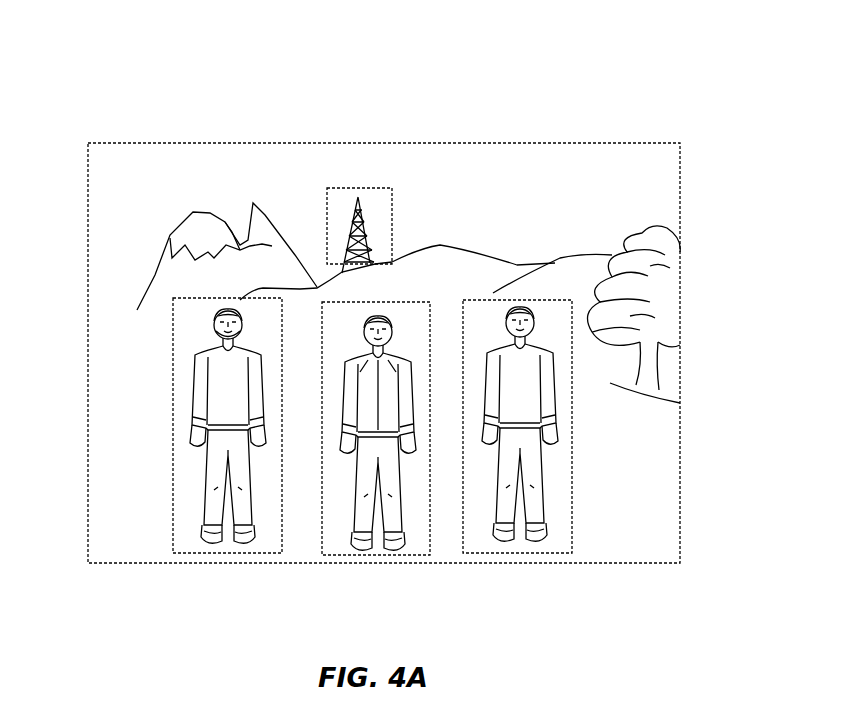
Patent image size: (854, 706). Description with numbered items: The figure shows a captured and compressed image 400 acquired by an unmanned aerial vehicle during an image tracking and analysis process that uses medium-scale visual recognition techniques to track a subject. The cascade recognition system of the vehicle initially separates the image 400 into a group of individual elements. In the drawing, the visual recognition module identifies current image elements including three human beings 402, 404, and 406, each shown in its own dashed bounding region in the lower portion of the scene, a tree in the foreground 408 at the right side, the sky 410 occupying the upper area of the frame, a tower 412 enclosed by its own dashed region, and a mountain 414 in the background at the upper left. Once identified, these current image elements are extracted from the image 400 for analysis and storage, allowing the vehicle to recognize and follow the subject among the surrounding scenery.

The captured and compressed image 400 is at (67, 104).
The human being 402 is at (230, 553).
The human being 404 is at (385, 553).
The human being 406 is at (550, 553).
The tree in the foreground 408 is at (677, 307).
The sky 410 is at (133, 155).
The tower 412 is at (360, 188).
The mountain 414 is at (198, 225).